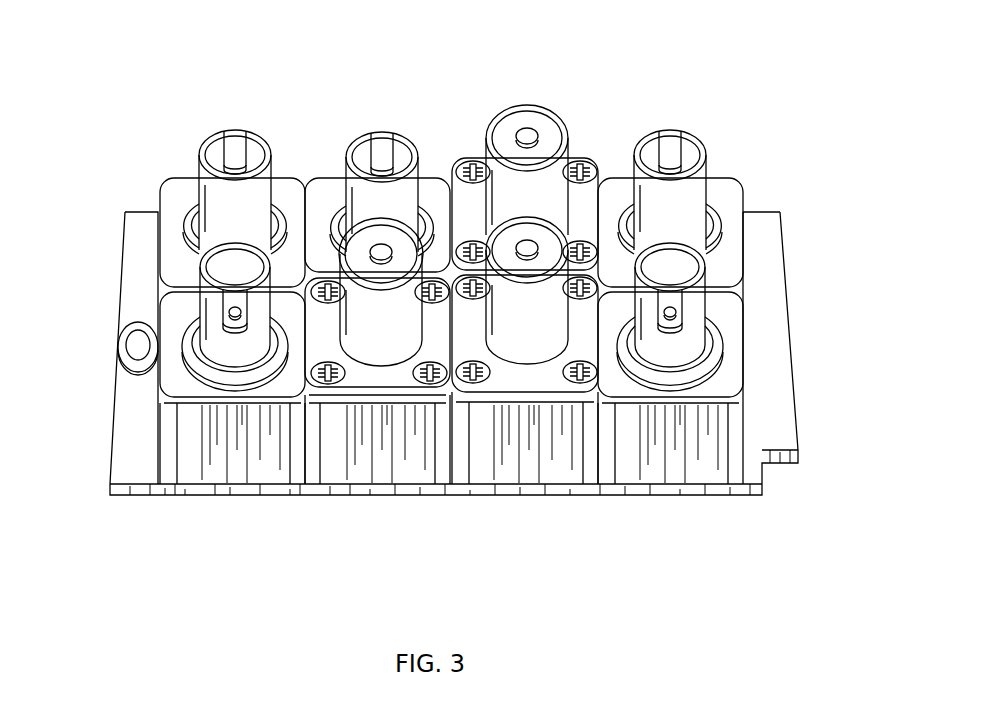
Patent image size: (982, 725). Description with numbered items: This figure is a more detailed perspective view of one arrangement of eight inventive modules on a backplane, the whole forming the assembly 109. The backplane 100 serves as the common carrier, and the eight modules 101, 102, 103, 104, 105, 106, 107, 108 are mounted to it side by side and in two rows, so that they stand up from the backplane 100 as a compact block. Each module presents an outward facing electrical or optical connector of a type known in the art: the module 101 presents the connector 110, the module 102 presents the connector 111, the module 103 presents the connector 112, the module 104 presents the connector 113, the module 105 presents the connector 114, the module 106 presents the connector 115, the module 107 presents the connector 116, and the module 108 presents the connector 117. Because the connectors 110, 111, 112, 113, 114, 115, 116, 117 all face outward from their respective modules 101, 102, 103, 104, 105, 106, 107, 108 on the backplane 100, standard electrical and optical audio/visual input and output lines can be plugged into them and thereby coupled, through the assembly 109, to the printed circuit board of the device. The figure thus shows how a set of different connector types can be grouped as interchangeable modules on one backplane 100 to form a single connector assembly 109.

The backplane 100 is at (128, 458).
The module 101 is at (190, 470).
The module 102 is at (160, 200).
The module 103 is at (353, 470).
The module 104 is at (320, 178).
The module 105 is at (503, 477).
The module 106 is at (590, 160).
The module 107 is at (645, 472).
The module 108 is at (725, 178).
The assembly 109 is at (158, 58).
The connector 110 is at (200, 295).
The connector 111 is at (205, 143).
The connector 112 is at (343, 327).
The connector 113 is at (368, 128).
The connector 114 is at (505, 343).
The connector 115 is at (538, 105).
The connector 116 is at (650, 343).
The connector 117 is at (698, 130).